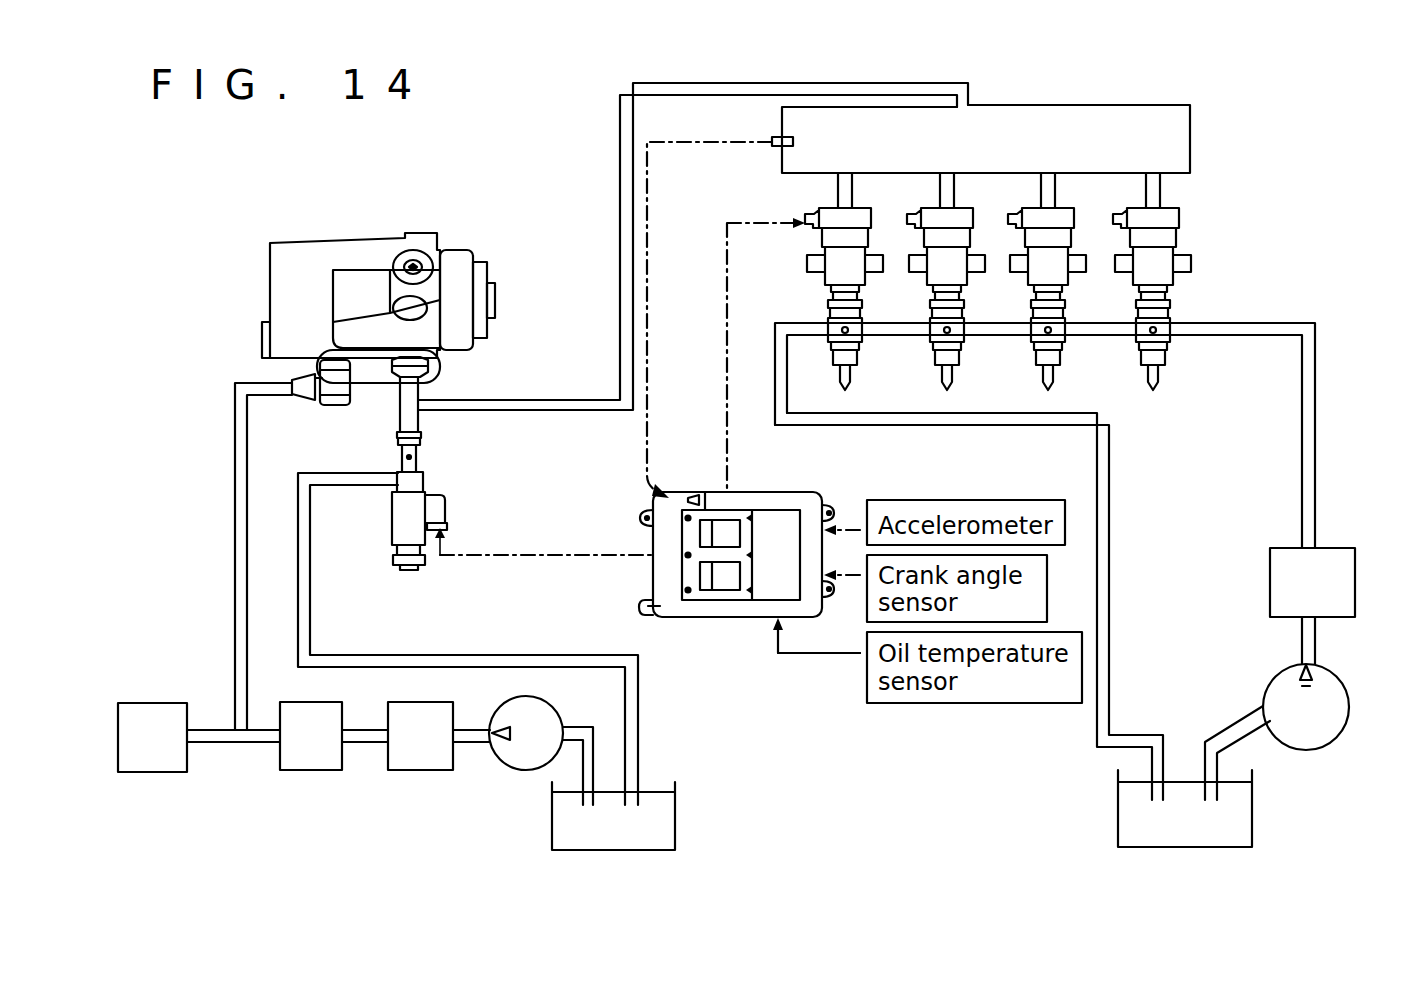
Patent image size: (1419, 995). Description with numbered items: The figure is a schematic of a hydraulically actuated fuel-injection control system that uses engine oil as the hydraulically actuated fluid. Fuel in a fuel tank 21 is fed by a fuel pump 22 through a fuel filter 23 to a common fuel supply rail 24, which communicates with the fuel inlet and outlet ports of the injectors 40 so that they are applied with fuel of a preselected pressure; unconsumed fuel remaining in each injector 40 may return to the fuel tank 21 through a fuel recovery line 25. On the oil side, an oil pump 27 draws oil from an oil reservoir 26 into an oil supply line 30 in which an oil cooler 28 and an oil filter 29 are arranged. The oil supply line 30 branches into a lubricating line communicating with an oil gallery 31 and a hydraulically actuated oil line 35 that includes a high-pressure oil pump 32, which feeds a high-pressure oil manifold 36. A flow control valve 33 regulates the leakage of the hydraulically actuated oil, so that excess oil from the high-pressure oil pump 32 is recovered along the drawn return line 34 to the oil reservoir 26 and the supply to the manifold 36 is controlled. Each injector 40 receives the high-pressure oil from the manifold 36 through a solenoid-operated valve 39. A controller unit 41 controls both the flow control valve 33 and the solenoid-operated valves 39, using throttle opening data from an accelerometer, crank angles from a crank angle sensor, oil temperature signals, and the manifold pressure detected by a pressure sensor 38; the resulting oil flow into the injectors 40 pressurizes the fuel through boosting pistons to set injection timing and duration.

The fuel tank 21 is at (1237, 820).
The fuel pump 22 is at (1335, 706).
The fuel filter 23 is at (1355, 580).
The common fuel supply rail 24 is at (1320, 327).
The fuel recovery line 25 is at (1112, 557).
The oil reservoir 26 is at (665, 823).
The oil pump 27 is at (520, 758).
The oil cooler 28 is at (405, 762).
The oil filter 29 is at (295, 765).
The oil supply line 30 is at (262, 738).
The oil gallery 31 is at (147, 765).
The high-pressure oil pump 32 is at (455, 350).
The flow control valve 33 is at (440, 495).
The fuel return passage 34 is at (460, 660).
The hydraulically actuated oil line 35 is at (620, 272).
The high-pressure oil manifold 36 is at (1133, 125).
The pressure sensor 38 is at (772, 140).
The solenoid-operated valve 39 is at (1133, 216).
The injector 40 is at (1164, 359).
The controller unit 41 is at (745, 608).